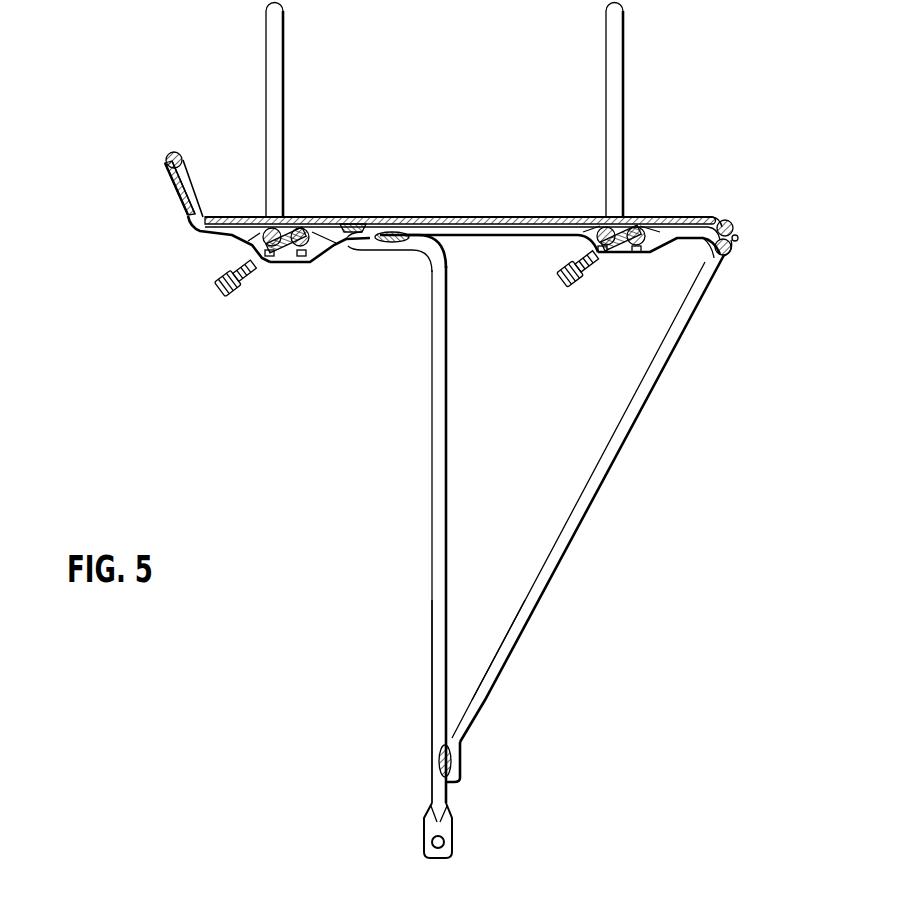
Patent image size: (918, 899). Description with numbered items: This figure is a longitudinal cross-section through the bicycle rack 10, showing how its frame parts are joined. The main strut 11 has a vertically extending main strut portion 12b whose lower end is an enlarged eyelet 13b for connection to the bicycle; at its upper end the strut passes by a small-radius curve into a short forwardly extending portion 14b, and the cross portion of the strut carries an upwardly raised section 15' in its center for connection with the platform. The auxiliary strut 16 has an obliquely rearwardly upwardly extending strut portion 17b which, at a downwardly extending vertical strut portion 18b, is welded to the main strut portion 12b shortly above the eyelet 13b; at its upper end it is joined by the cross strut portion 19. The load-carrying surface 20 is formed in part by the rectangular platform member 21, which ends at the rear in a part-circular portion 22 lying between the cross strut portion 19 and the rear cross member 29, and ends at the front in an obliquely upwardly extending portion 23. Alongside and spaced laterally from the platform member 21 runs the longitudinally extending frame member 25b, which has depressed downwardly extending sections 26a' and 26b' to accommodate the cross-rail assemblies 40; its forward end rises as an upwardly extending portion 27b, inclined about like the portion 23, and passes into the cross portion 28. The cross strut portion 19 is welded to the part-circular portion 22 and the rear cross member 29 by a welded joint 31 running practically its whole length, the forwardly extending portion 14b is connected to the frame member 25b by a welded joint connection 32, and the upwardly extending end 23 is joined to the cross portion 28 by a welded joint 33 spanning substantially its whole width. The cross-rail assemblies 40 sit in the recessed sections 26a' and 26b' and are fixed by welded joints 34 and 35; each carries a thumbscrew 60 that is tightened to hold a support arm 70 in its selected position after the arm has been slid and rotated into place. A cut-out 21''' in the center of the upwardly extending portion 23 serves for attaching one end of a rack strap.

The bicycle rack 10 is at (724, 426).
The main strut 11 is at (428, 542).
The vertically extending main strut portion 12b is at (430, 648).
The enlarged eyelet 13b is at (455, 828).
The forwardly extending portion 14b is at (420, 250).
The raised section 15' is at (372, 199).
The auxiliary strut 16 is at (592, 516).
The upwardly extending strut portion 17b is at (525, 642).
The downwardly extending vertical strut portion 18b is at (462, 760).
The cross strut portion 19 is at (740, 266).
The load-carrying surface 20 is at (510, 214).
The platform member 21 is at (462, 201).
The cut-out 21''' is at (124, 214).
The part-circular portion 22 is at (716, 258).
The obliquely upwardly extending portion 23 is at (190, 228).
The longitudinally extending frame member 25b is at (500, 240).
The depressed downwardly extending section 26a' is at (309, 296).
The depressed downwardly extending section 26b' is at (651, 269).
The upwardly extending portion 27b is at (195, 180).
The cross portion 28 is at (176, 154).
The rear cross member 29 is at (730, 219).
The welded joint 31 is at (739, 237).
The welded joint connection 32 is at (388, 244).
The welded joint 33 is at (166, 160).
The welded joint 34 is at (272, 258).
The welded joint 35 is at (602, 262).
The cross-rail assembly 40 is at (312, 226).
The thumbscrew 60 is at (226, 290).
The support arm 70 is at (286, 92).